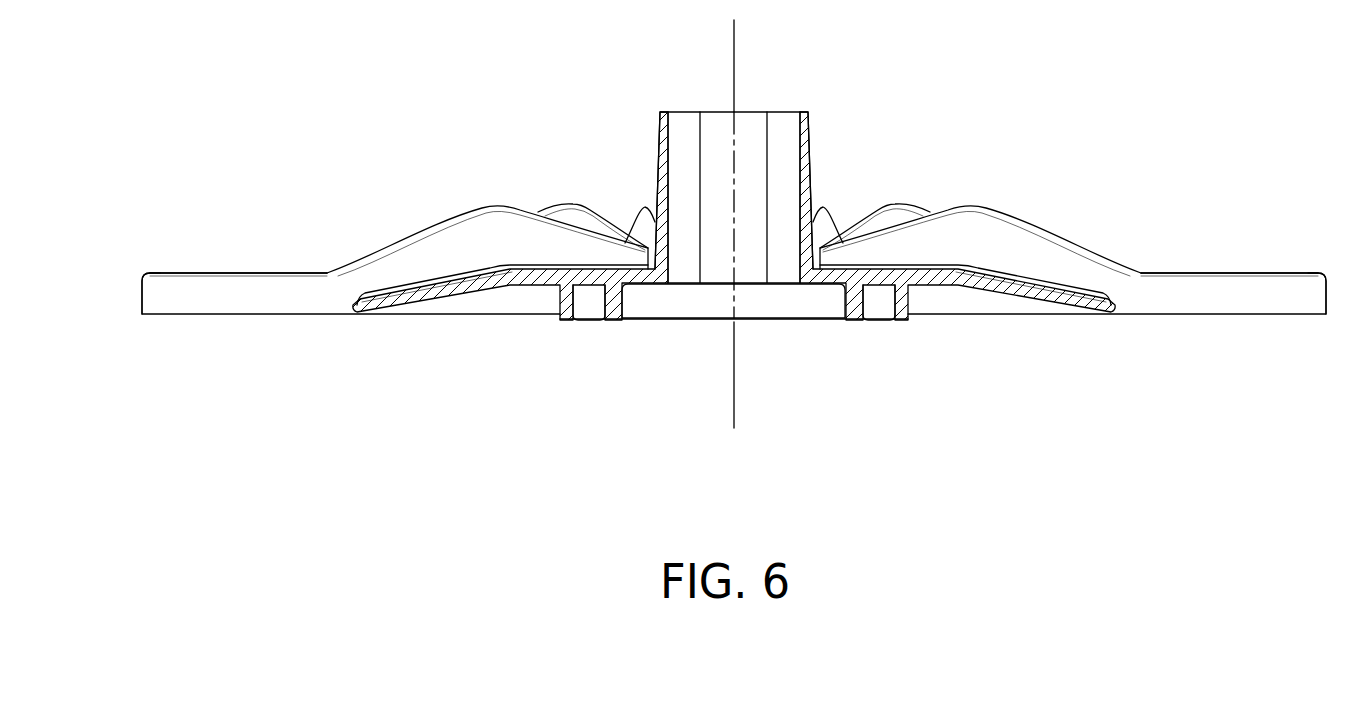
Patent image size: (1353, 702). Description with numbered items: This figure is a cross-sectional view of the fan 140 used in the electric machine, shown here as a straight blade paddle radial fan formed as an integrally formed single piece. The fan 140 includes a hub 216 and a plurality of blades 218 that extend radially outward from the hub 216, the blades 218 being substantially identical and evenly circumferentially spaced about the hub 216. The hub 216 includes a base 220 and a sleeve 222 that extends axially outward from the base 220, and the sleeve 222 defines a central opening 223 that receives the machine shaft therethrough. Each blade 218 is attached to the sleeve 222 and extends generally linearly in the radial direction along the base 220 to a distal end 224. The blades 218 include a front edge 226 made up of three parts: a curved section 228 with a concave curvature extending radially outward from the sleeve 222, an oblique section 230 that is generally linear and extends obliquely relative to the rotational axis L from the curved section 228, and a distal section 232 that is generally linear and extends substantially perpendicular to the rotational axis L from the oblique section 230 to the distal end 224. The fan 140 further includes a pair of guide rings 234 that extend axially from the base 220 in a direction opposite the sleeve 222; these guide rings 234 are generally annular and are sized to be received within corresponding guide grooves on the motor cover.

The fan 140 is at (1053, 131).
The blades 218 is at (220, 298).
The distal ends 224 is at (143, 293).
The distal section 232 is at (255, 273).
The front edge 226 is at (478, 212).
The oblique section 230 is at (734, 205).
The curved section 228 is at (535, 222).
The base 220 is at (734, 248).
The hub 216 is at (540, 286).
The guide rings 234 is at (892, 311).
The sleeve 222 is at (810, 157).
The central opening 223 is at (755, 137).
The rotational axis L is at (734, 393).